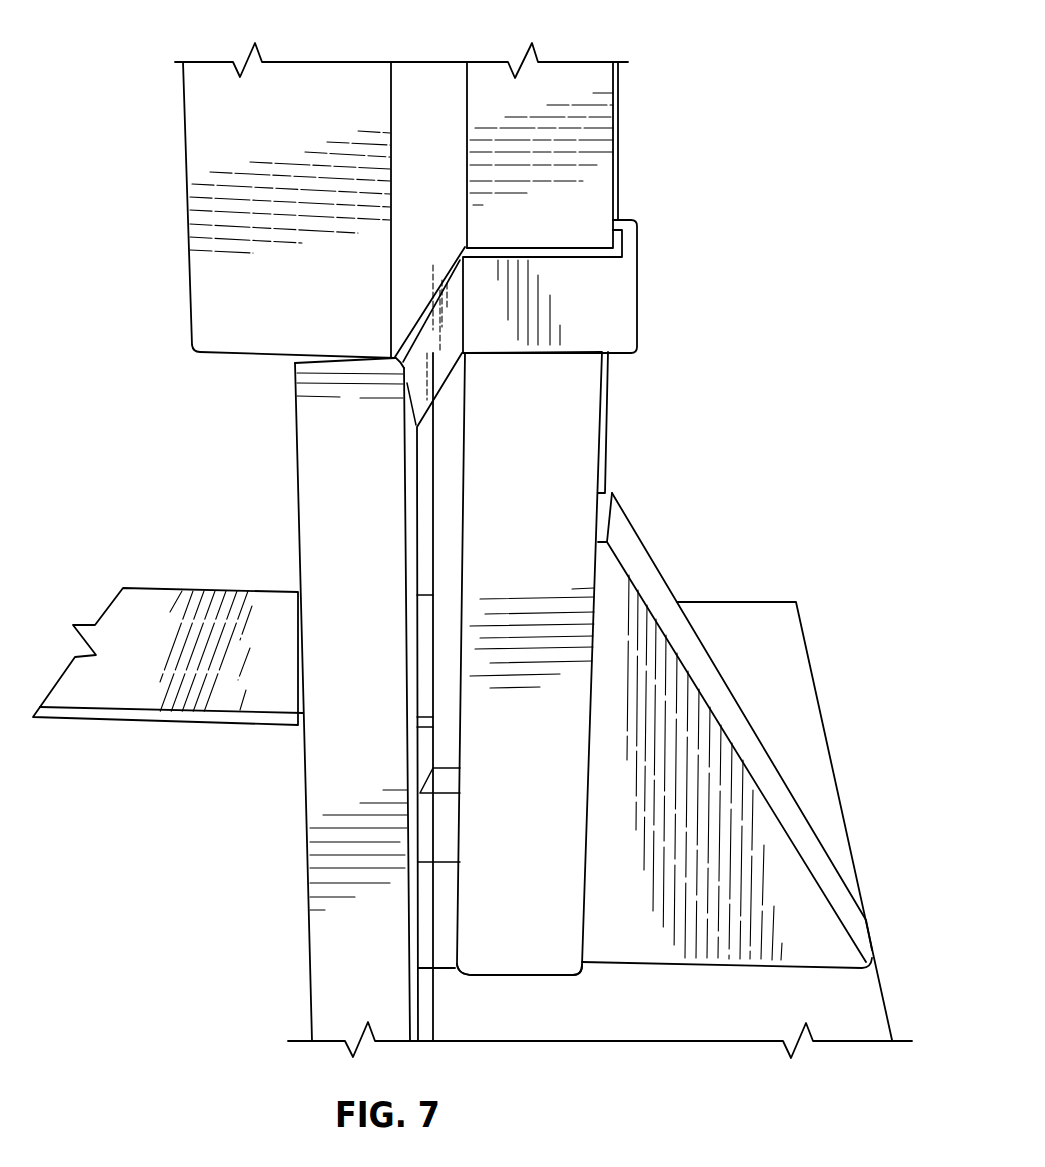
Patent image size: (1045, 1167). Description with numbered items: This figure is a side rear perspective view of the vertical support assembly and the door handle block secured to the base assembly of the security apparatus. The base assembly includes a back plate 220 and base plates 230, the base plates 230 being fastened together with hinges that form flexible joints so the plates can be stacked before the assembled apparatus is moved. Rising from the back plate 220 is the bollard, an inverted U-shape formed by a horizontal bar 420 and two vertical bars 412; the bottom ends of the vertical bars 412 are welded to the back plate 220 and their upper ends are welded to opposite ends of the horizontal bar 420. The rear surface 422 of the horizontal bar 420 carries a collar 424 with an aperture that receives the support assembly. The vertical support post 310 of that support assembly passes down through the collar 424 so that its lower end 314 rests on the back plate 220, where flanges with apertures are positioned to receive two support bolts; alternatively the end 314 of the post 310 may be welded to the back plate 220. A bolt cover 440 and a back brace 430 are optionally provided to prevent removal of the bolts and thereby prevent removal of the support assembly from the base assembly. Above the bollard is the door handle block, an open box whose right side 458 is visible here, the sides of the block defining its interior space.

The horizontal bar 420 is at (453, 317).
The right side 458 is at (218, 295).
The collar 424 is at (607, 298).
The vertical support post 310 is at (577, 410).
The rear surface 422 is at (460, 353).
The vertical bars 412 is at (453, 463).
The base plates 230 is at (152, 603).
The back plate 220 is at (795, 656).
The back brace 430 is at (751, 810).
The bolt cover 440 is at (442, 965).
The end 314 is at (555, 972).